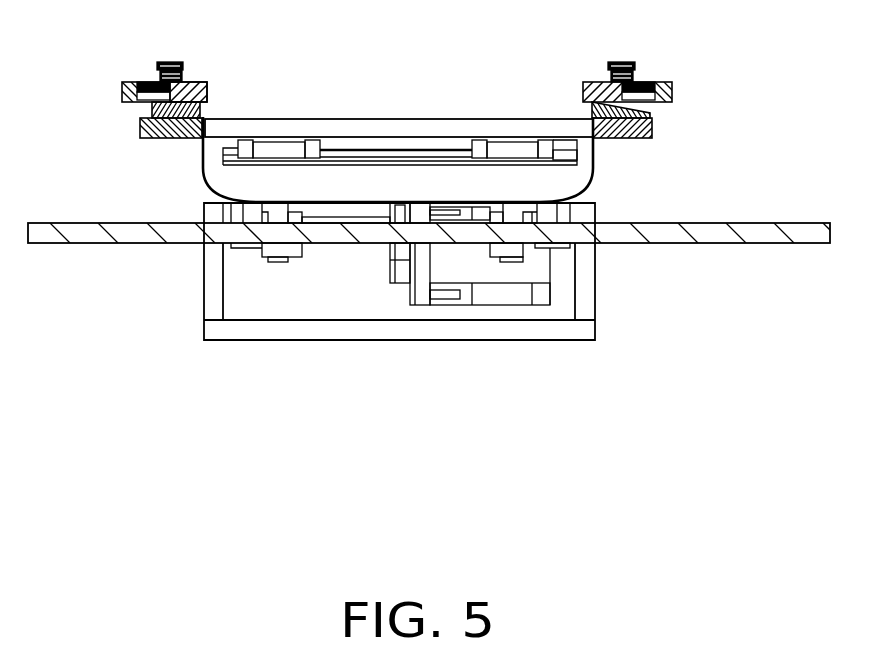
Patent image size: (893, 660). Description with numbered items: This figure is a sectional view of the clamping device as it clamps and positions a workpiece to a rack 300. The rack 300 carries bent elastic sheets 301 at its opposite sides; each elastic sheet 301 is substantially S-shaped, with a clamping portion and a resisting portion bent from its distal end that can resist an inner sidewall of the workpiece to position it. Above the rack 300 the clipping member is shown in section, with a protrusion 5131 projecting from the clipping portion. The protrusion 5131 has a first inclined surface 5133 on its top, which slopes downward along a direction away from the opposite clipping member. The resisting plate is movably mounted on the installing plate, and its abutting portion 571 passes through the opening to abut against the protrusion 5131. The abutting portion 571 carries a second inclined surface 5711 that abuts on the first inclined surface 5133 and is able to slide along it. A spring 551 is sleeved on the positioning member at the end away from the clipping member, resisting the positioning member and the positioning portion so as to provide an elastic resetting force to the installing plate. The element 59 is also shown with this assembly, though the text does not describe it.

The rack 300 is at (257, 213).
The elastic sheet 301 is at (203, 160).
The fixing assembly 59 is at (150, 82).
The spring 551 is at (172, 62).
The abutting portion 571 is at (192, 83).
The second inclined surface 5711 is at (203, 108).
The first inclined surface 5133 is at (147, 108).
The protrusion 5131 is at (140, 116).